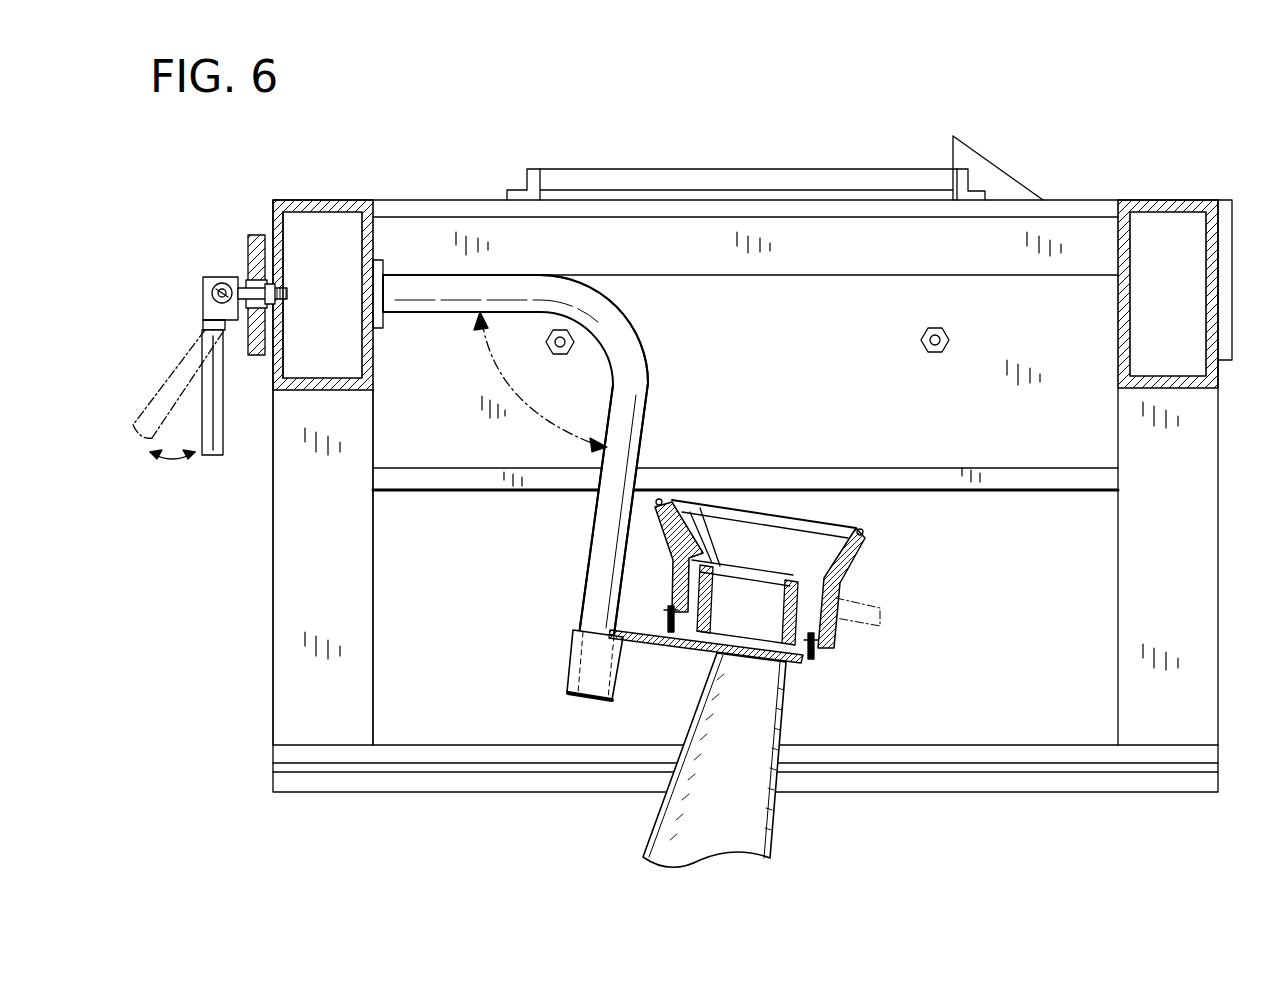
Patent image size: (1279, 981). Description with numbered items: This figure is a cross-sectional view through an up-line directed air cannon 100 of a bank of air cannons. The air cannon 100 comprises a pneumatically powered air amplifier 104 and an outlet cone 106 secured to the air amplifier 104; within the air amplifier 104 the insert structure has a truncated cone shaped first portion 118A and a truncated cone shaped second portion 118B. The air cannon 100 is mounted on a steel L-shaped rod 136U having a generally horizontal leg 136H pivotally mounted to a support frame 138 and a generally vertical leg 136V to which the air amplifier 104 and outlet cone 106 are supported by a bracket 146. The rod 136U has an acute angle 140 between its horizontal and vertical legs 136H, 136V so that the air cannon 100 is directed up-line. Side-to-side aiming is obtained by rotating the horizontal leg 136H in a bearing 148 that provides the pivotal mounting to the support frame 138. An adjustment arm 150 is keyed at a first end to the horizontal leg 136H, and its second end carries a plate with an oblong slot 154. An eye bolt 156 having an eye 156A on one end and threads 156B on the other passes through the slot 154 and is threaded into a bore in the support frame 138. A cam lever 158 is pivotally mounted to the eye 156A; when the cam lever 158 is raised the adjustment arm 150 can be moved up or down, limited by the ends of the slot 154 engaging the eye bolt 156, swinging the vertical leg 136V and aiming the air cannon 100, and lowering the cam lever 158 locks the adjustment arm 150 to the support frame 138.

The air cannon 100 is at (844, 535).
The air amplifier 104 is at (835, 587).
The outlet cone 106 is at (778, 813).
The first portion 118A is at (812, 553).
The second portion 118B is at (766, 648).
The horizontal leg 136H is at (510, 300).
The L-shaped rod 136U is at (607, 348).
The vertical leg 136V is at (580, 524).
The support frame 138 is at (290, 598).
The acute angle 140 is at (500, 372).
The bracket 146 is at (643, 662).
The bearing 148 is at (383, 268).
The adjustment arm 150 is at (257, 245).
The oblong slot 154 is at (253, 320).
The eye bolt 156 is at (256, 318).
The eye 156A is at (222, 282).
The threads 156B is at (299, 296).
The cam lever 158 is at (204, 380).